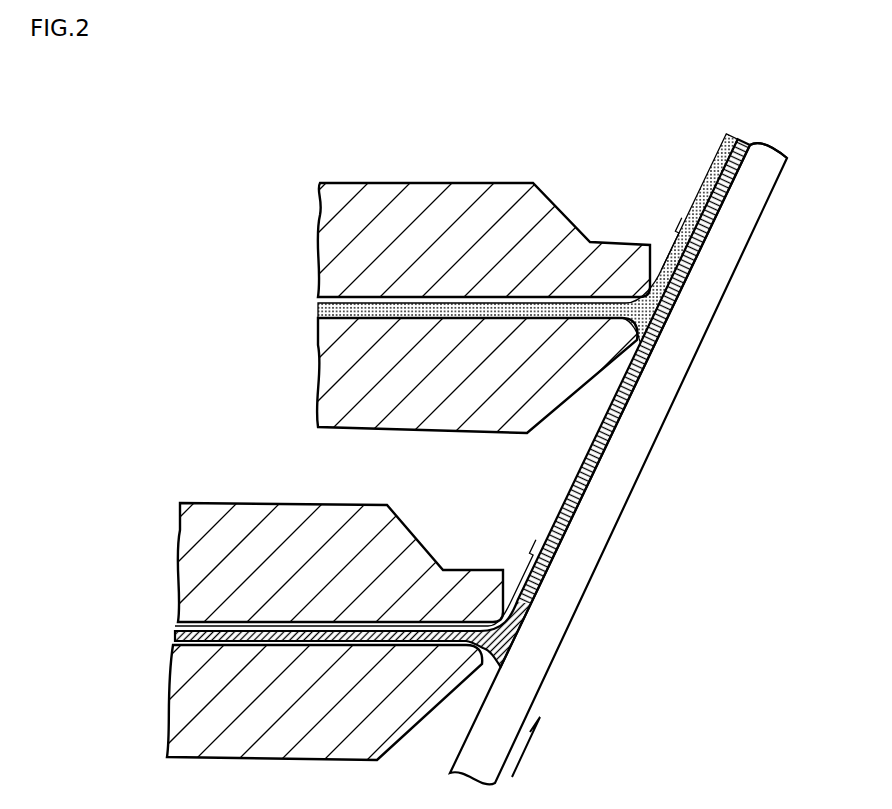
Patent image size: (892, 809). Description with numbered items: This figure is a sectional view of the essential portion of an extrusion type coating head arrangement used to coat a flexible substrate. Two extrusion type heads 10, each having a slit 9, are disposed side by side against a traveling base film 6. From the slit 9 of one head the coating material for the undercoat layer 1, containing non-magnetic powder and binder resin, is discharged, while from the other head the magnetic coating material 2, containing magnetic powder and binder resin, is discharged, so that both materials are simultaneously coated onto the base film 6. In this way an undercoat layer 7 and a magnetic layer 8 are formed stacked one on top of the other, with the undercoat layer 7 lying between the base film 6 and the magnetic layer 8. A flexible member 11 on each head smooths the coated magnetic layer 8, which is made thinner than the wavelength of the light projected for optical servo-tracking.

The coating material for the undercoat layer 1 is at (178, 633).
The magnetic coating material 2 is at (318, 304).
The base film 6 is at (665, 398).
The undercoat layer 7 is at (752, 145).
The magnetic layer 8 is at (721, 157).
The slit 9 is at (333, 318).
The extrusion type head 10 is at (297, 191).
The flexible member 11 is at (675, 232).